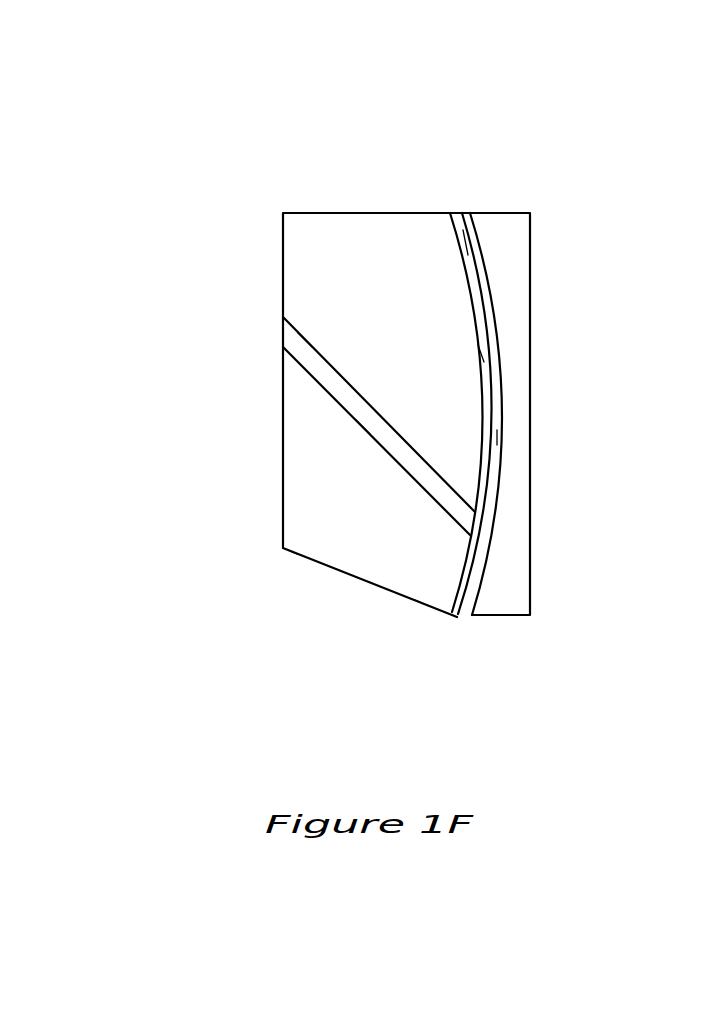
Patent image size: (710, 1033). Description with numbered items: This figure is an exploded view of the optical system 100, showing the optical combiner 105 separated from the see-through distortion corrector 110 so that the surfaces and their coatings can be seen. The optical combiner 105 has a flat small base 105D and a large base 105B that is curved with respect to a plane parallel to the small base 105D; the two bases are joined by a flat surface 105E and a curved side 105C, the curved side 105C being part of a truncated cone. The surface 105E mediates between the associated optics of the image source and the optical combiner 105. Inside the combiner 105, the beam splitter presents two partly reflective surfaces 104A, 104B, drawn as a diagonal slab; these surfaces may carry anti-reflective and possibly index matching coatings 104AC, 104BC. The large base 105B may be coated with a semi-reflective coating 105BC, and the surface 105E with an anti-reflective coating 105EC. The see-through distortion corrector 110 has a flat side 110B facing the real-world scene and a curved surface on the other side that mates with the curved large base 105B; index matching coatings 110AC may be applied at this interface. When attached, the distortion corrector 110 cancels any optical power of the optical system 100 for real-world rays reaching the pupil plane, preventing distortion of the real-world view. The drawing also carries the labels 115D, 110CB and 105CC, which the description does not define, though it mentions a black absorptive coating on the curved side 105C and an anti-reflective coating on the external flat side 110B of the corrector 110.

The optical system 100 is at (213, 75).
The optical combiner 105 is at (300, 290).
The see-through distortion corrector 110 is at (520, 465).
The partly reflective surface 104A is at (403, 443).
The partly reflective surface 104B is at (433, 500).
The anti-reflective coating 105EC is at (367, 212).
The large base 105B is at (468, 253).
The surface 105E is at (307, 213).
The side surface 115D is at (283, 252).
The semi-reflective coating 105BC is at (482, 353).
The index matching coating 110AC is at (497, 436).
The anti-reflective and index matching coating 104AC is at (305, 343).
The anti-reflective and index matching coating 104BC is at (363, 427).
The small base 105D is at (283, 495).
The flat side 110B is at (532, 505).
The curved side 105C is at (290, 551).
The bottom corner of second optical element 110CB is at (532, 565).
The bottom surface coating of first optical element 105CC is at (422, 606).